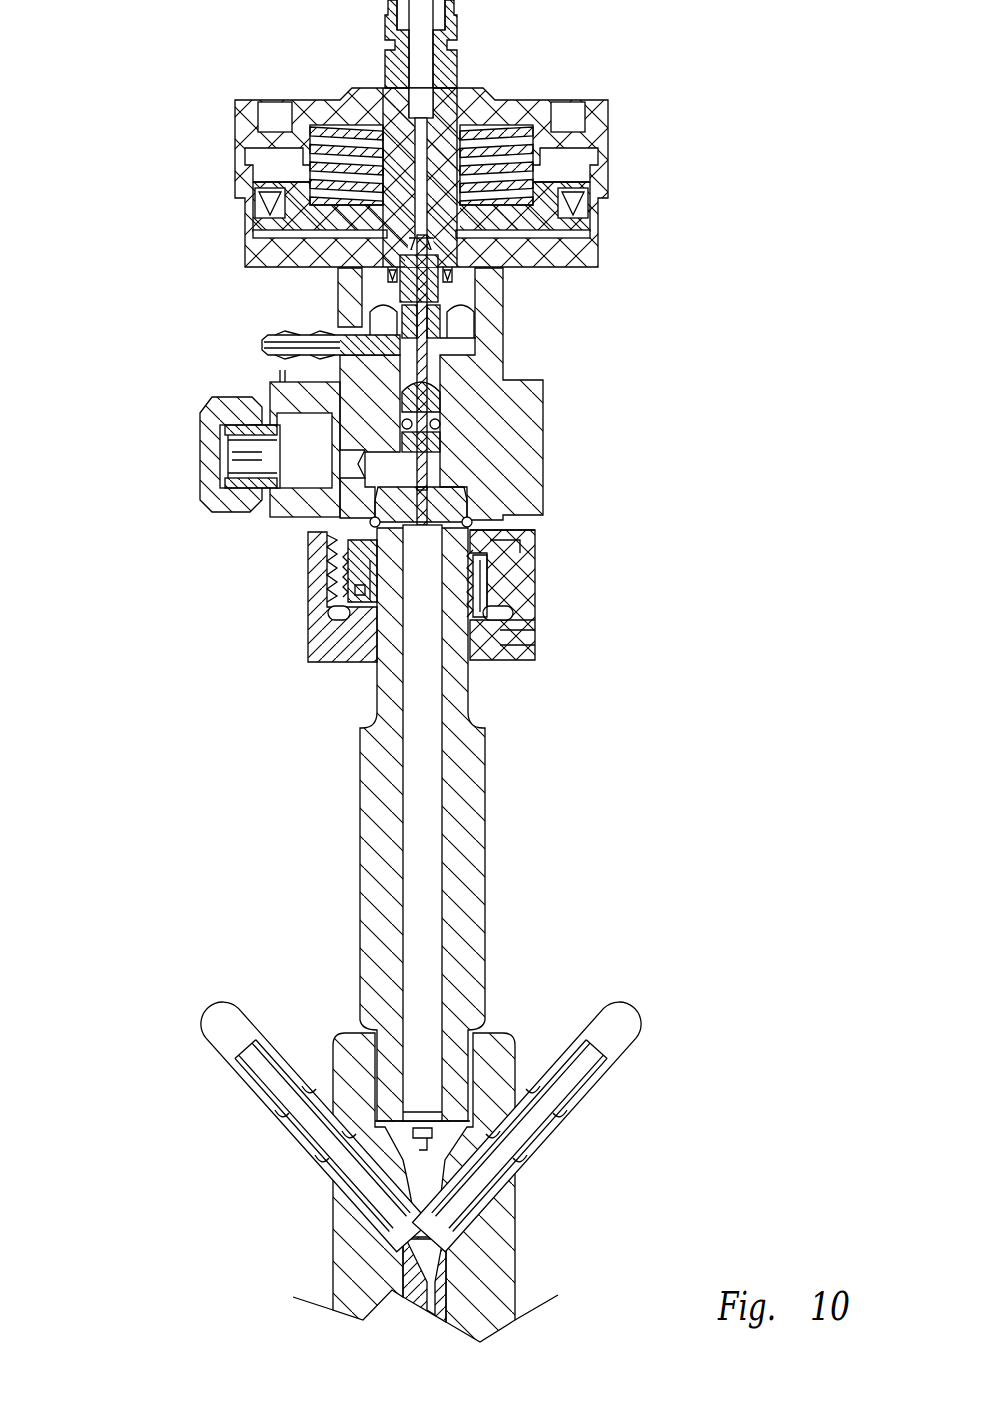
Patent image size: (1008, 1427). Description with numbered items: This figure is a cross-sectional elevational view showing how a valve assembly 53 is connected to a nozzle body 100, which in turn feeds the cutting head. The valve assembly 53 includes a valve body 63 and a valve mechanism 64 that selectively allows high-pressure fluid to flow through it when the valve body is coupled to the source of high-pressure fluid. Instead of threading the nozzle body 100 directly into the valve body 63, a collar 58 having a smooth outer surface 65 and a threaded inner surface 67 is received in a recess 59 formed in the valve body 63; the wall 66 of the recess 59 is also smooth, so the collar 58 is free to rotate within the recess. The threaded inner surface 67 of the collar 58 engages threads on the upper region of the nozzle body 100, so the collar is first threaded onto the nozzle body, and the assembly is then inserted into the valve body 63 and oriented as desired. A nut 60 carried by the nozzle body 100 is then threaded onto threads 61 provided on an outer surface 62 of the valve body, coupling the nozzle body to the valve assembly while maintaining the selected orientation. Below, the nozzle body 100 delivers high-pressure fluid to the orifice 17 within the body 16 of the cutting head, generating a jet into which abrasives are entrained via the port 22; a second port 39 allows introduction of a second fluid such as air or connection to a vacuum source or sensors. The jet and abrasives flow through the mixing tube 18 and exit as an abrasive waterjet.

The valve assembly 53 is at (165, 196).
The valve mechanism 64 is at (430, 405).
The valve body 63 is at (470, 447).
The recess 59 is at (518, 550).
The outer surface 62 is at (335, 522).
The wall 66 is at (480, 590).
The threads 61 is at (327, 570).
The collar 58 is at (535, 615).
The nut 60 is at (323, 647).
The smooth outer surface 65 is at (373, 578).
The threaded inner surface 67 is at (362, 588).
The nozzle body 100 is at (378, 873).
The port 22 is at (218, 1028).
The second port 39 is at (622, 1040).
The body 16 is at (335, 1230).
The orifice 17 is at (470, 1140).
The mixing tube 18 is at (418, 1297).